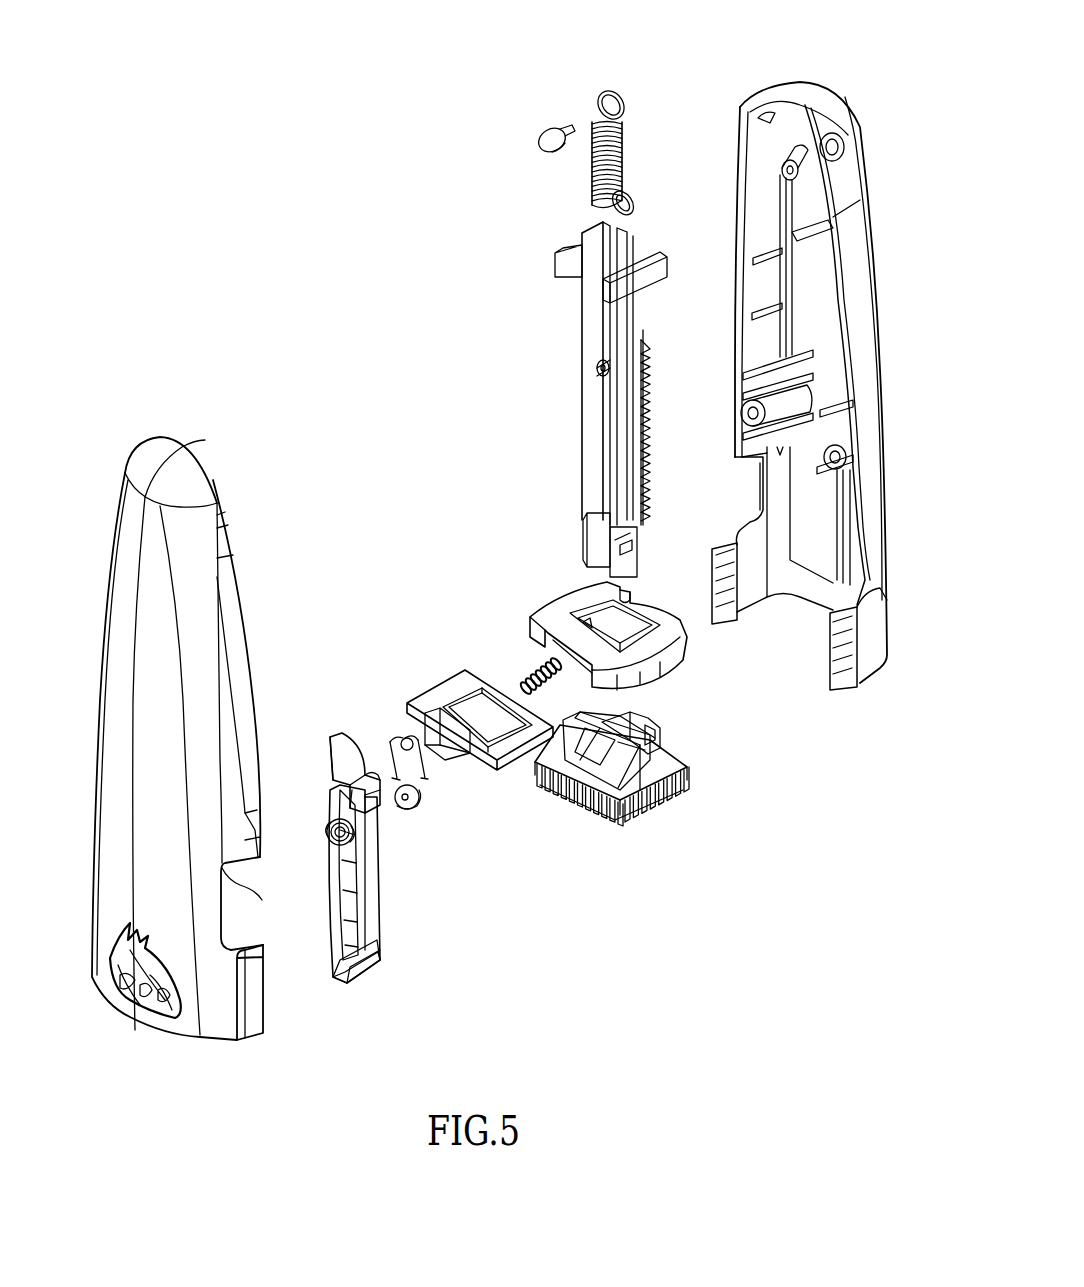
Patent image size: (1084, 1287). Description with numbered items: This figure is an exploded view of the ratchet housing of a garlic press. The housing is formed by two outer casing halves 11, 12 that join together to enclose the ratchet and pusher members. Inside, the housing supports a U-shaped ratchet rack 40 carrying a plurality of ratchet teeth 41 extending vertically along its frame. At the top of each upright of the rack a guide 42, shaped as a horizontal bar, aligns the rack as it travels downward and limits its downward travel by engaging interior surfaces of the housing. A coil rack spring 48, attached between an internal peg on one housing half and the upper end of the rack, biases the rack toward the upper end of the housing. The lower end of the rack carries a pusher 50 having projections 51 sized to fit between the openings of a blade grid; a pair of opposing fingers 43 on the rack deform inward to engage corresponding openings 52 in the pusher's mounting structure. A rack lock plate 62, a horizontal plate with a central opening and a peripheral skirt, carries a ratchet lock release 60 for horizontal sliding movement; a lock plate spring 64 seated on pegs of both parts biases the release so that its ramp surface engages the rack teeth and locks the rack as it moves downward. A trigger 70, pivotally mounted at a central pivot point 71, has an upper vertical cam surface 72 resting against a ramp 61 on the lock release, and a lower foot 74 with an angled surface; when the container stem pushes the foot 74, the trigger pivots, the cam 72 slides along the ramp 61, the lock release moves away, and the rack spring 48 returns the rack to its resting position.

The outer casing half 11 is at (160, 448).
The outer casing half 12 is at (797, 93).
The ratchet rack 40 is at (546, 376).
The ratchet teeth 41 is at (648, 405).
The guide 42 is at (652, 265).
The opposing fingers 43 is at (637, 557).
The rack spring 48 is at (621, 95).
The pusher 50 is at (625, 790).
The projections 51 is at (605, 818).
The openings 52 is at (630, 753).
The ratchet lock release 60 is at (455, 682).
The ramp 61 is at (432, 718).
The rack lock plate 62 is at (575, 607).
The lock plate spring 64 is at (527, 668).
The trigger 70 is at (384, 878).
The central pivot point 71 is at (332, 838).
The upper vertical cam surface 72 is at (335, 752).
The foot 74 is at (350, 987).